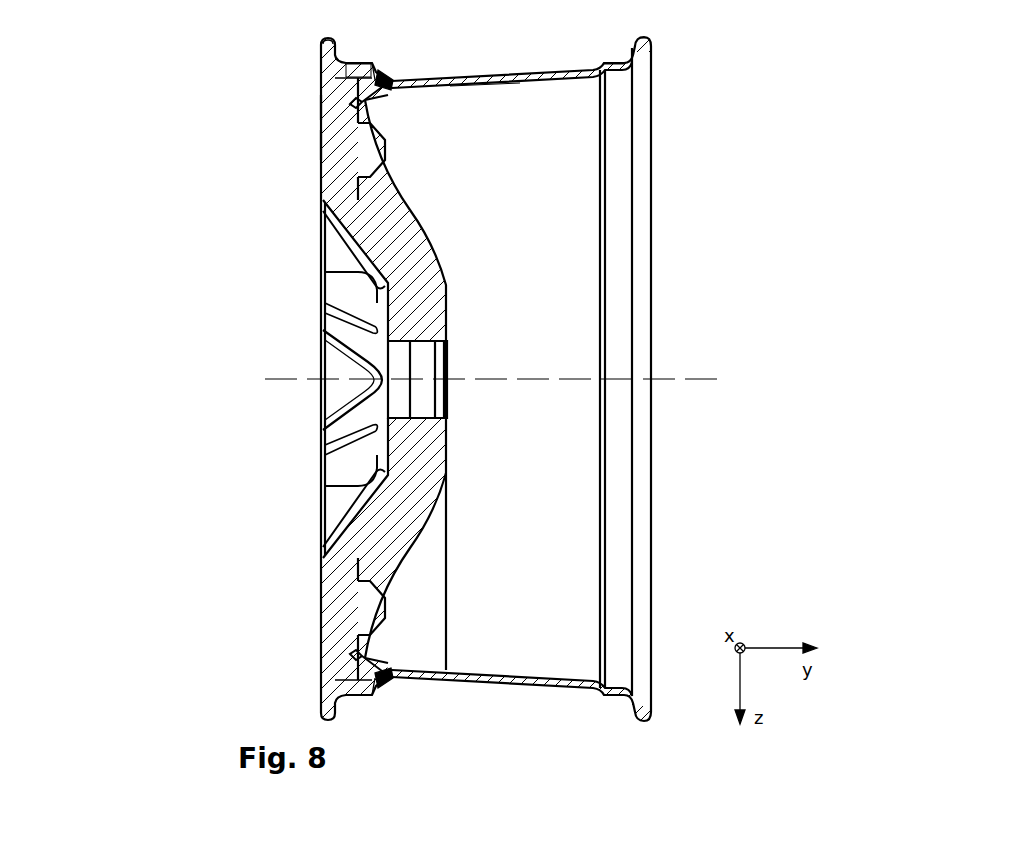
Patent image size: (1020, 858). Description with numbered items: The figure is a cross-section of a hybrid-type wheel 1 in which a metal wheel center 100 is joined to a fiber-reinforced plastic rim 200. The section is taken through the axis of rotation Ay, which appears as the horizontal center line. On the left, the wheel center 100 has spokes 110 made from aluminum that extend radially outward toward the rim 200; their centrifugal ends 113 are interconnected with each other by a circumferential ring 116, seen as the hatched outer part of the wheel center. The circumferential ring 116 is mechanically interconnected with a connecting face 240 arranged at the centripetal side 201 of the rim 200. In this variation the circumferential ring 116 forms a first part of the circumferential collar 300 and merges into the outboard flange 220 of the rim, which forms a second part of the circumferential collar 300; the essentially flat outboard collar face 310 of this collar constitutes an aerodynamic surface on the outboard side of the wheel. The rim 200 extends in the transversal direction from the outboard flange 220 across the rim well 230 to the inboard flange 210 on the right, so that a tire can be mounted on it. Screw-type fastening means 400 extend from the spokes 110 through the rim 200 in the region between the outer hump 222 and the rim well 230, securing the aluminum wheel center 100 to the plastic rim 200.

The wheel 1 is at (162, 685).
The wheel center 100 is at (292, 487).
The spokes 110 is at (385, 538).
The centrifugal ends 113 is at (345, 193).
The circumferential ring 116 is at (330, 369).
The rim 200 is at (570, 111).
The centripetal side 201 is at (455, 84).
The inboard flange 210 is at (650, 45).
The outboard flange 220 is at (327, 37).
The outer hump 222 is at (374, 90).
The rim well 230 is at (540, 72).
The connecting face 240 is at (345, 63).
The circumferential collar 300 is at (321, 107).
The outboard collar face 310 is at (321, 143).
The screw-type fastening means 400 is at (389, 74).
The axis of rotation Ay is at (722, 379).